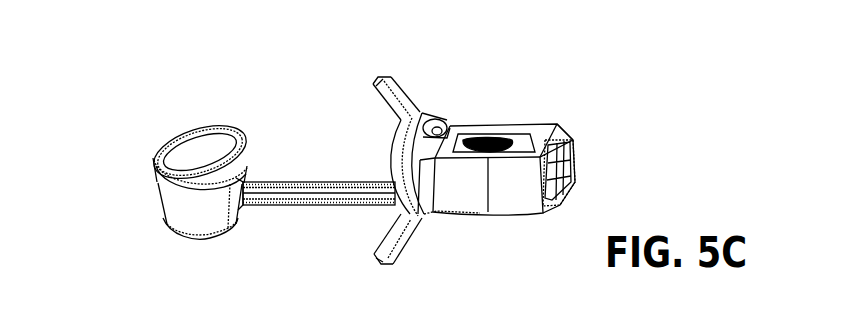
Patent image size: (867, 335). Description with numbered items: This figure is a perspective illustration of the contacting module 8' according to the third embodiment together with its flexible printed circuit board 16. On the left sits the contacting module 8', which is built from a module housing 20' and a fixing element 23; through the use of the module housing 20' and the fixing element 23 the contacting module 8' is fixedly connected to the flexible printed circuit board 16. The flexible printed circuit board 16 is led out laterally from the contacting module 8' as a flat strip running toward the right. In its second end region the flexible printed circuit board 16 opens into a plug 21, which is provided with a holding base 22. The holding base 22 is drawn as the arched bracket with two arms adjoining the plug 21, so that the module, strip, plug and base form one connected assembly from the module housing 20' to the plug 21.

The contacting module 8' is at (312, 151).
The flexible printed circuit board 16 is at (332, 215).
The module housing 20' is at (200, 234).
The plug 21 is at (480, 122).
The holding base 22 is at (357, 78).
The fixing element 23 is at (165, 131).